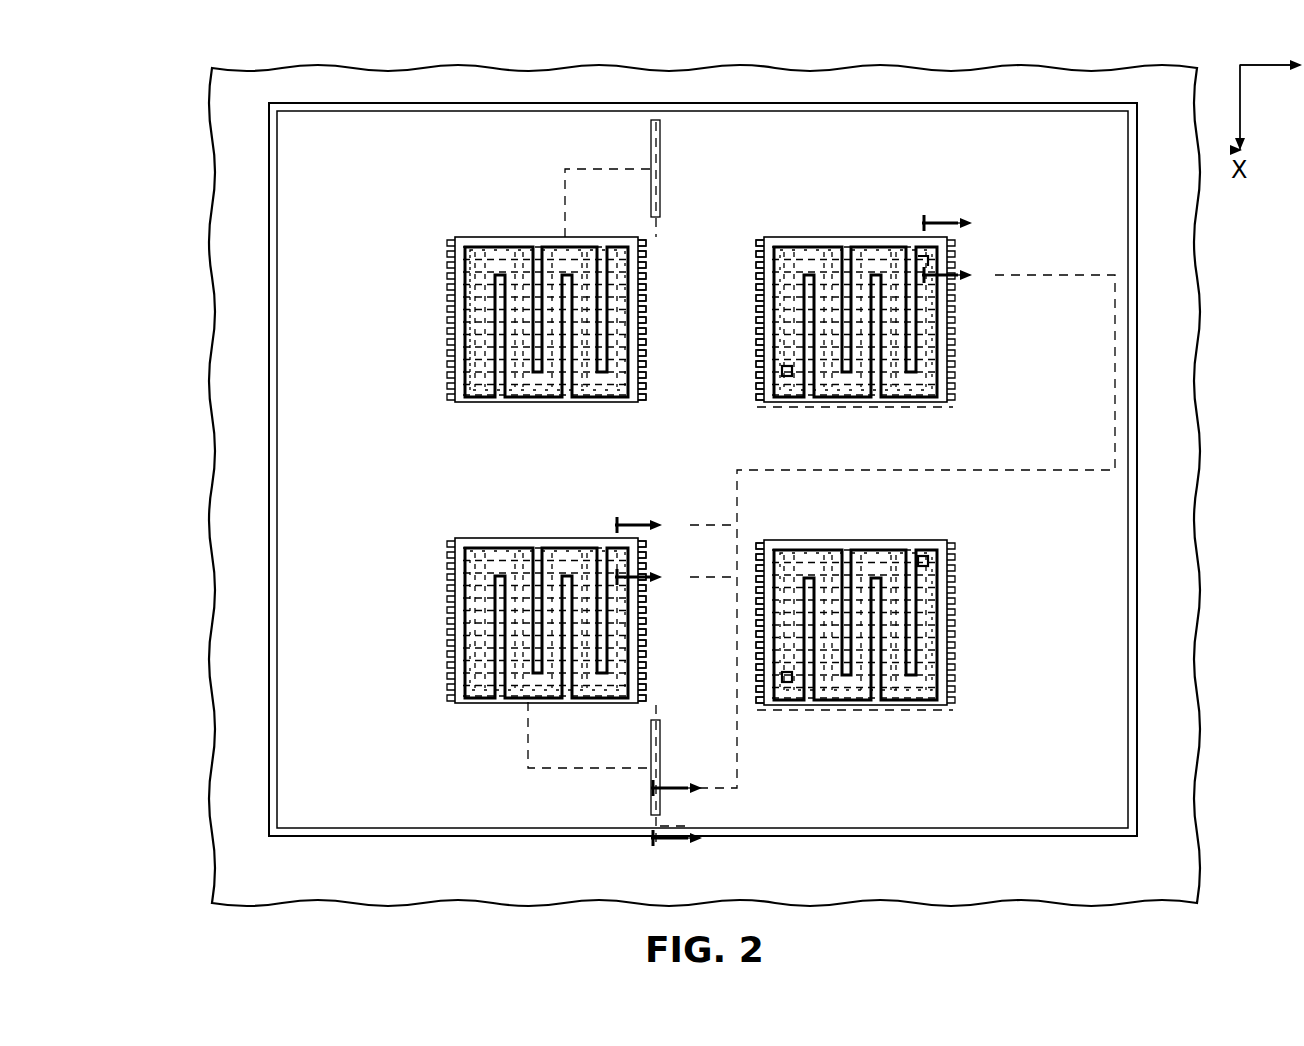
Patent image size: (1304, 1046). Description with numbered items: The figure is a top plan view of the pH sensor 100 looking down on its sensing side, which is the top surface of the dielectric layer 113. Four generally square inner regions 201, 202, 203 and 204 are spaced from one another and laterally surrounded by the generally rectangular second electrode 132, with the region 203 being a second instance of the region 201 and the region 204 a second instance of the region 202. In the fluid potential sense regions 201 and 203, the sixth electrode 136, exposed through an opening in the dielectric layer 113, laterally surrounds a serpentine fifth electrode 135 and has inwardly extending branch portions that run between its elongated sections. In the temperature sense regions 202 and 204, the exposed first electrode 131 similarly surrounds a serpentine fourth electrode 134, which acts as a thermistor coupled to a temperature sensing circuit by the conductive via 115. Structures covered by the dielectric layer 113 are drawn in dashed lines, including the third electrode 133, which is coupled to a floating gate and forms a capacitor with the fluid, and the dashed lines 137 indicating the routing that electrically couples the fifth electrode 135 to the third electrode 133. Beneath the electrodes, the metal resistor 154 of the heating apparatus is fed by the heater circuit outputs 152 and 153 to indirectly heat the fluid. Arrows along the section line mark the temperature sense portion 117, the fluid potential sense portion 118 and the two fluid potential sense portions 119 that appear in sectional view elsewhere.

The sensor 100 is at (156, 98).
The dielectric layer 113 is at (528, 201).
The conductive via 115 is at (920, 262).
The temperature sense portion 117 is at (905, 208).
The fluid potential sense portion 118 is at (563, 722).
The fluid potential sense portion 119 is at (674, 174).
The first electrode 131 is at (815, 240).
The second electrode 132 is at (640, 826).
The third electrode 133 is at (650, 158).
The fourth electrode 134 is at (888, 380).
The fifth electrode 135 is at (546, 397).
The sixth electrode 136 is at (590, 400).
The dashed lines 137 is at (600, 172).
The heater circuit output 152 is at (446, 240).
The heater circuit output 153 is at (446, 262).
The metal resistor 154 is at (757, 290).
The first region 201 is at (385, 192).
The second region 202 is at (1045, 238).
The third region 203 is at (385, 497).
The fourth region 204 is at (902, 717).